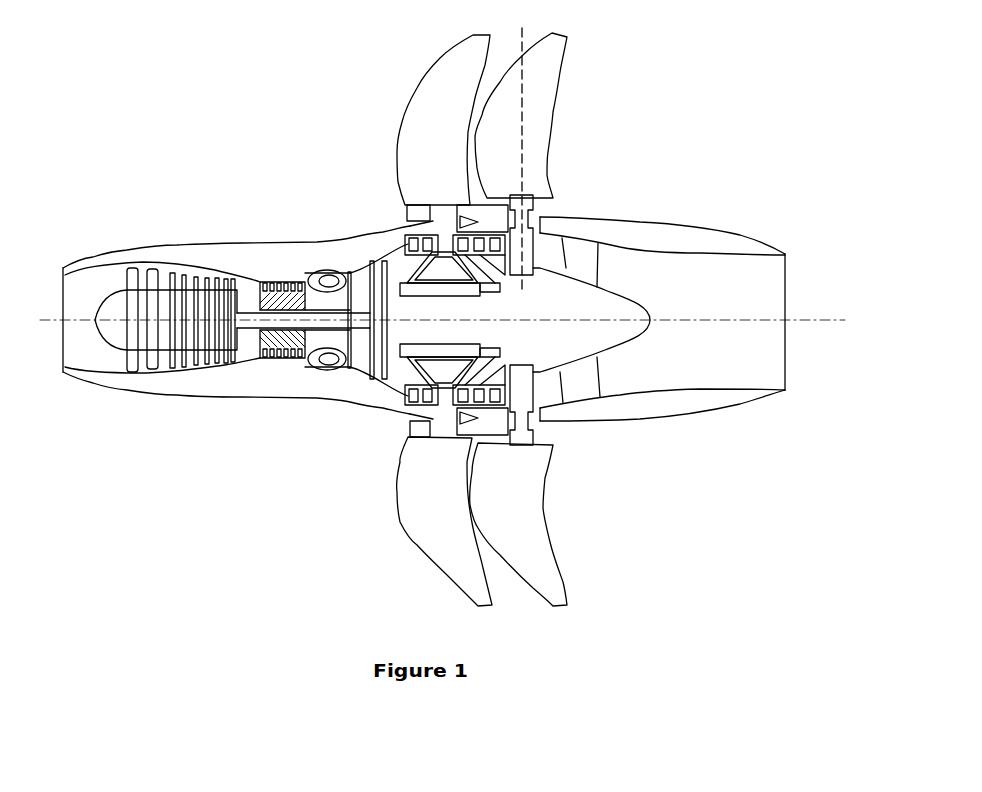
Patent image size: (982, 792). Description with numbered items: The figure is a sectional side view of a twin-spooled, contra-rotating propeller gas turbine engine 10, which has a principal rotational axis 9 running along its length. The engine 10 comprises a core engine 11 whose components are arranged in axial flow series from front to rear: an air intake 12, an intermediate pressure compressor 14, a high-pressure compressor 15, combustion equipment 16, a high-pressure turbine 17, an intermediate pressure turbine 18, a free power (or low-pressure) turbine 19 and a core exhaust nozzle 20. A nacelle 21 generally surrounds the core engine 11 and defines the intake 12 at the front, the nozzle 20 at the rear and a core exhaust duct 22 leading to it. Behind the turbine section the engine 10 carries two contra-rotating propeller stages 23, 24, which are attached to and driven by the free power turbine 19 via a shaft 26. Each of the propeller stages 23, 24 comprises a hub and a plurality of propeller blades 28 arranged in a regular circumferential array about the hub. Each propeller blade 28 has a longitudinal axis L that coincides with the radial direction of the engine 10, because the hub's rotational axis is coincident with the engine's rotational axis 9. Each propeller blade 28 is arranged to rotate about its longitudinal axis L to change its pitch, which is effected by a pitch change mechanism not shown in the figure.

The principal rotational axis 9 is at (55, 321).
The gas turbine engine 10 is at (178, 130).
The core engine 11 is at (302, 270).
The air intake 12 is at (63, 363).
The intermediate pressure compressor 14 is at (147, 370).
The high-pressure compressor 15 is at (258, 358).
The combustion equipment 16 is at (315, 370).
The high-pressure turbine 17 is at (351, 370).
The intermediate pressure turbine 18 is at (388, 330).
The free power turbine 19 is at (407, 230).
The core exhaust nozzle 20 is at (785, 390).
The nacelle 21 is at (187, 260).
The core exhaust duct 22 is at (712, 358).
The propeller stage 23 is at (420, 533).
The propeller stage 24 is at (542, 541).
The shaft 26 is at (478, 292).
The propeller blades 28 is at (402, 98).
The longitudinal axis L is at (523, 146).